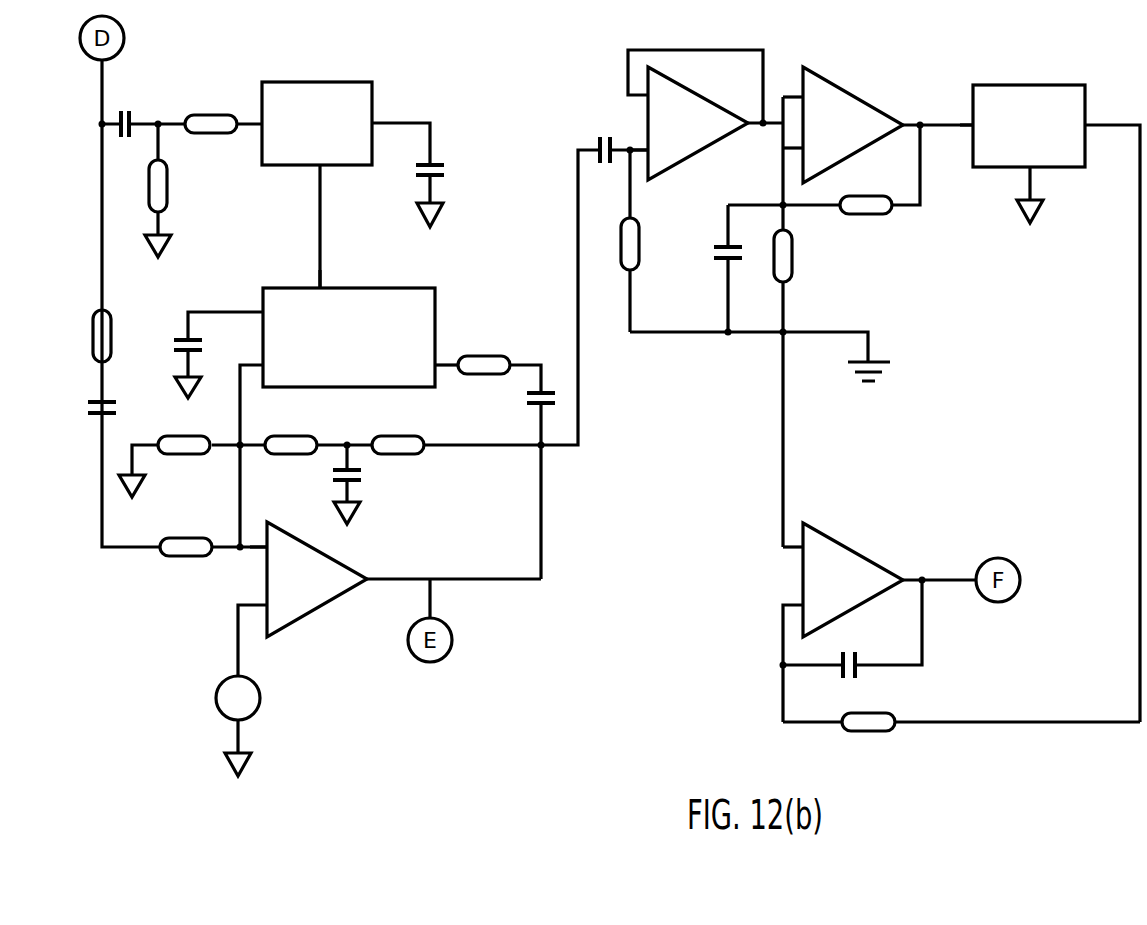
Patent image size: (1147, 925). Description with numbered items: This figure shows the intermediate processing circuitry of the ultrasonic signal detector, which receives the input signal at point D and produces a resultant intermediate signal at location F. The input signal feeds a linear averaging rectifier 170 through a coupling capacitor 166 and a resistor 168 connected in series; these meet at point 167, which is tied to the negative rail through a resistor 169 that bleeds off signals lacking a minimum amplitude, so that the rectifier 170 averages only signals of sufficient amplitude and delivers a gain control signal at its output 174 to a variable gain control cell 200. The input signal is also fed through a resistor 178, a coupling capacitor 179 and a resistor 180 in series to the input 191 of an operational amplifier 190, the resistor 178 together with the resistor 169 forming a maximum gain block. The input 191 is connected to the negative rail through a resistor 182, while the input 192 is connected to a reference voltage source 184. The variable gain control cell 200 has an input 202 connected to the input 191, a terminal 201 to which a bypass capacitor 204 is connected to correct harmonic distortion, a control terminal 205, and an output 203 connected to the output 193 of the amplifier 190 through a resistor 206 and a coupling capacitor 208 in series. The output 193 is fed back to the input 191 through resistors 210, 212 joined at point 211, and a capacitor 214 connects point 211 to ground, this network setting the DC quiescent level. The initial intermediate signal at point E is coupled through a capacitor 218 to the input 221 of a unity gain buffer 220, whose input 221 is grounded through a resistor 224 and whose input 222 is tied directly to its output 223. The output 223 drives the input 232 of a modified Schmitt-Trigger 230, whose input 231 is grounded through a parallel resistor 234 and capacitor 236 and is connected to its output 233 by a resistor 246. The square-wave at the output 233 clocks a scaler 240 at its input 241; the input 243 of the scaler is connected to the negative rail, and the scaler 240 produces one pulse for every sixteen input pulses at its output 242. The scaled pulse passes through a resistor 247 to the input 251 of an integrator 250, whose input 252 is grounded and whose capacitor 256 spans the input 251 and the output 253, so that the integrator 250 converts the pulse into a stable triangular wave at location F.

The capacitor 166 is at (122, 110).
The point 167 is at (159, 112).
The resistor 168 is at (203, 112).
The resistor 169 is at (168, 199).
The linear averaging rectifier 170 is at (372, 82).
The output 174 is at (322, 173).
The resistor 178 is at (110, 315).
The capacitor 179 is at (117, 402).
The resistor 180 is at (180, 563).
The resistor 182 is at (178, 461).
The reference voltage source 184 is at (259, 713).
The operational amplifier 190 is at (312, 613).
The input 191 is at (264, 541).
The input 192 is at (265, 601).
The output 193 is at (368, 579).
The variable gain control cell 200 is at (436, 288).
The terminal 201 is at (262, 312).
The input 202 is at (262, 365).
The output 203 is at (439, 365).
The capacitor 204 is at (174, 340).
The VGC control input 205 is at (318, 287).
The resistor 206 is at (507, 358).
The capacitor 208 is at (528, 420).
The resistor 210 is at (291, 436).
The point 211 is at (351, 438).
The resistor 212 is at (390, 436).
The capacitor 214 is at (366, 479).
The capacitor 218 is at (598, 138).
The unity gain buffer 220 is at (700, 148).
The input 221 is at (648, 170).
The input 222 is at (644, 100).
The output 223 is at (751, 126).
The resistor 224 is at (643, 256).
The modified Schmitt-Trigger 230 is at (868, 104).
The input 231 is at (800, 150).
The input 232 is at (799, 94).
The output 233 is at (906, 124).
The resistor 234 is at (793, 268).
The capacitor 236 is at (731, 262).
The scaler 240 is at (981, 84).
The input 241 is at (972, 124).
The output 242 is at (1088, 124).
The input 243 is at (1035, 170).
The resistor 246 is at (866, 216).
The resistor 247 is at (871, 735).
The integrator 250 is at (852, 550).
The input 251 is at (800, 605).
The input 252 is at (798, 553).
The output 253 is at (906, 578).
The capacitor 256 is at (858, 680).